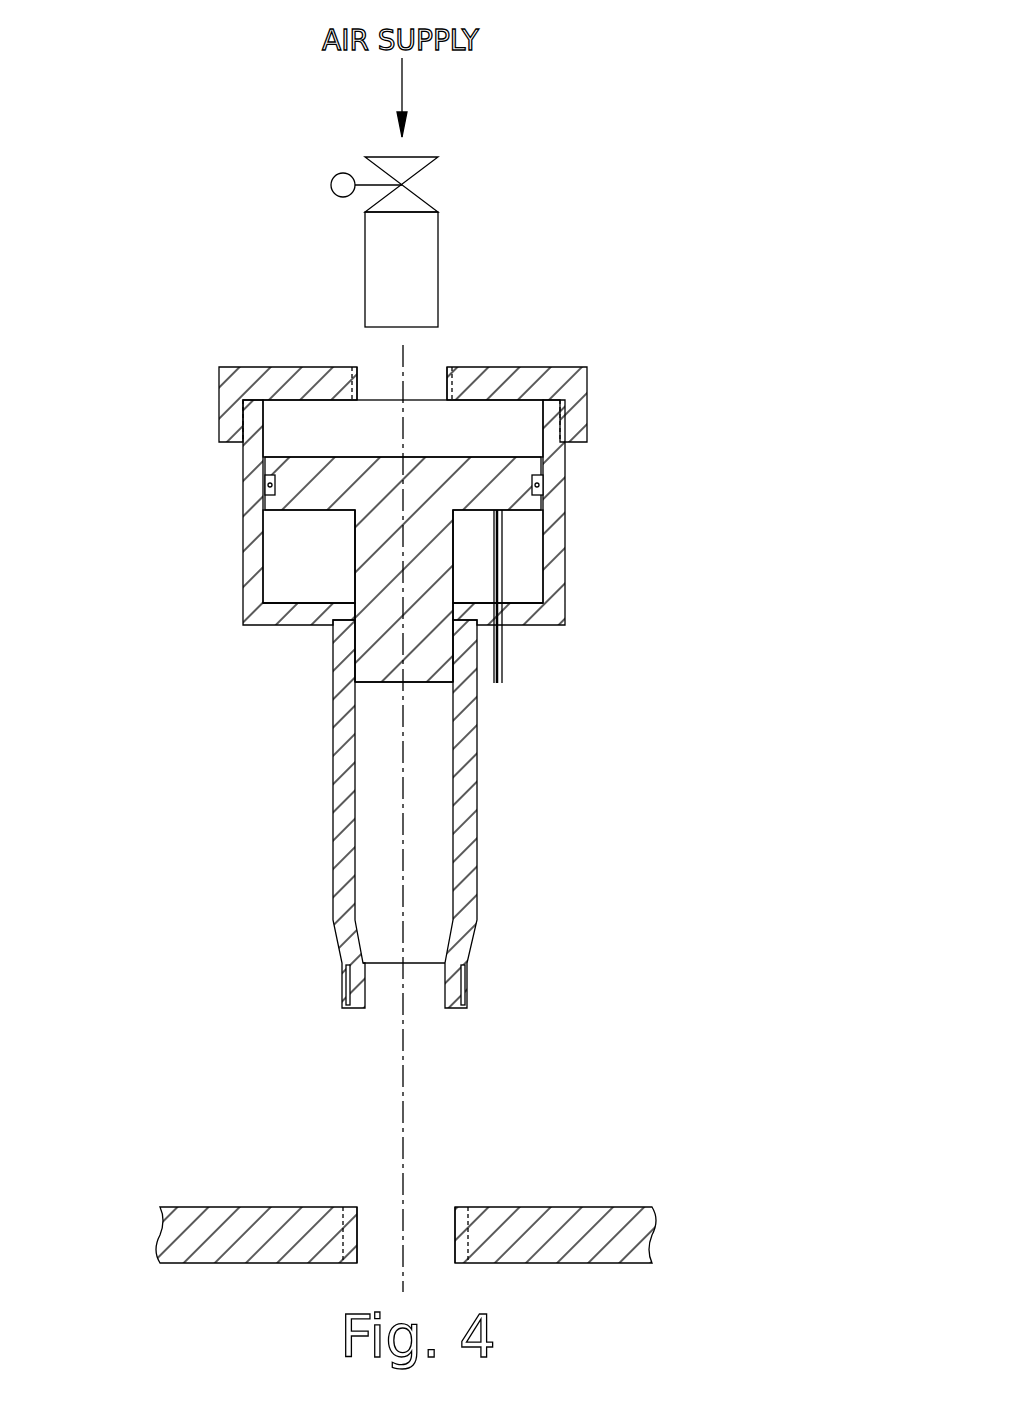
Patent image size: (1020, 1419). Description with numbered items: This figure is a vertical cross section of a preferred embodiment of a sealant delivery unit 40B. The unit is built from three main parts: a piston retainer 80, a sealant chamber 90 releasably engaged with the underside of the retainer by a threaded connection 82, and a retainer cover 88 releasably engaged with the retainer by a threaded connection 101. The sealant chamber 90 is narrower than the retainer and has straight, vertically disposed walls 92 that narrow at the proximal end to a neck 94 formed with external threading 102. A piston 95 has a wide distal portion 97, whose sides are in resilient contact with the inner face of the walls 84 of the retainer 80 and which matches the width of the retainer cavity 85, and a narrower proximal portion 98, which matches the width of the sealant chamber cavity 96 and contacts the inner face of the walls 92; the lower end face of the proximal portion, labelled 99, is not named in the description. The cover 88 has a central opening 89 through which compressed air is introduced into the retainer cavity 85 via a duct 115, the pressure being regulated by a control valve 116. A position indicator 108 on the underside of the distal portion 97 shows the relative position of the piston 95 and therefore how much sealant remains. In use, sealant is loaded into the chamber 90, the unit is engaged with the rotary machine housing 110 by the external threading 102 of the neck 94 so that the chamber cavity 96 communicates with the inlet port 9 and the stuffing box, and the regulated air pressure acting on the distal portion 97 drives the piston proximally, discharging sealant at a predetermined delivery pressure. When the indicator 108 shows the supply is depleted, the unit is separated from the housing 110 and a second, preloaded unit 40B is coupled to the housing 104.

The sealant delivery unit 40B is at (480, 633).
The control valve 116 is at (331, 183).
The duct 115 is at (373, 255).
The retainer cover 88 is at (286, 383).
The central opening 89 is at (418, 377).
The retainer cavity 85 is at (473, 423).
The distal portion 97 is at (480, 483).
The threaded connection 101 is at (560, 423).
The piston retainer 80 is at (350, 523).
The walls 84 is at (255, 522).
The piston 95 is at (342, 535).
The threaded connection 82 is at (335, 628).
The proximal portion 98 is at (380, 657).
The stem end face 99 is at (423, 683).
The position indicator 108 is at (502, 665).
The sealant chamber 90 is at (408, 823).
The walls 92 is at (467, 817).
The sealant chamber cavity 96 is at (430, 872).
The neck 94 is at (358, 988).
The external threading 102 is at (463, 985).
The rotary machine housing 110 is at (575, 1228).
The housing 104 is at (355, 1228).
The inlet port 9 is at (422, 1227).